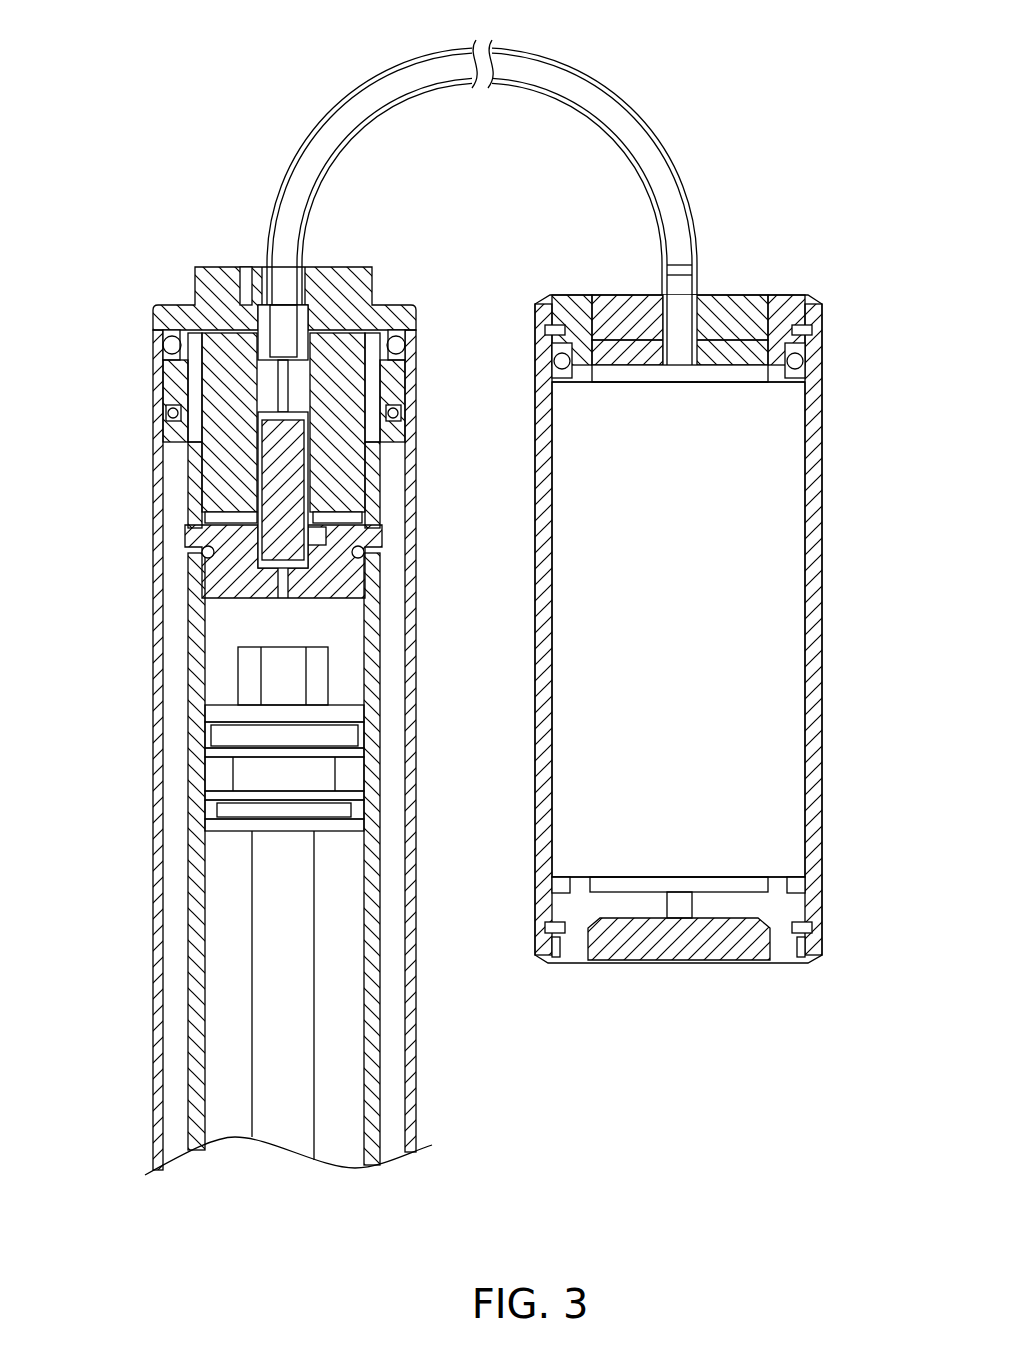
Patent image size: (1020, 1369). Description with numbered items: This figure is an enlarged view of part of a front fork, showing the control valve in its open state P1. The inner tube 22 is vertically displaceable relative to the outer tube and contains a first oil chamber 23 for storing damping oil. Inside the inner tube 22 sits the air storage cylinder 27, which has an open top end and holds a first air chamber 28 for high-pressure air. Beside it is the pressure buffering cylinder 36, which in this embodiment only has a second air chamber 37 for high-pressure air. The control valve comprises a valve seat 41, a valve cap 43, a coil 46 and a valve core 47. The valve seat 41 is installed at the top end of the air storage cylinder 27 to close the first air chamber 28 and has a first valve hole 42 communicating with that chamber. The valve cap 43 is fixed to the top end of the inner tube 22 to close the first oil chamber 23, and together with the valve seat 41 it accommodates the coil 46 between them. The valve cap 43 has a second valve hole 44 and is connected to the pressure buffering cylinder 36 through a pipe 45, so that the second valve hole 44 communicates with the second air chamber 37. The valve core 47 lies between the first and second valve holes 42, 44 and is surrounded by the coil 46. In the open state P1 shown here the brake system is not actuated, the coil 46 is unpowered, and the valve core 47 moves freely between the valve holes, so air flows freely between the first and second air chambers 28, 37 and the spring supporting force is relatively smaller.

The inner tube 22 is at (155, 573).
The first oil chamber 23 is at (177, 1058).
The air storage cylinder 27 is at (195, 876).
The first air chamber 28 is at (213, 648).
The pressure buffering cylinder 36 is at (832, 272).
The second air chamber 37 is at (782, 590).
The valve seat 41 is at (195, 495).
The first valve hole 42 is at (282, 590).
The valve cap 43 is at (173, 322).
The second valve hole 44 is at (282, 384).
The pipe 45 is at (358, 87).
The coil 46 is at (340, 398).
The valve core 47 is at (292, 483).
The open state P1 is at (340, 533).